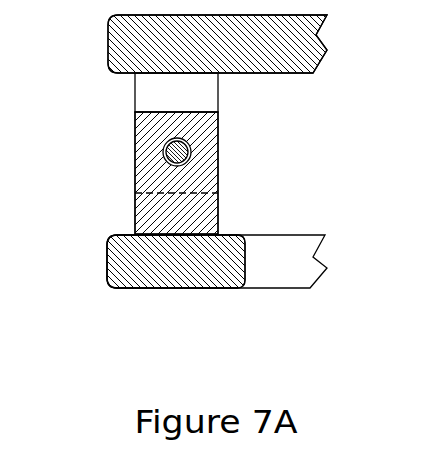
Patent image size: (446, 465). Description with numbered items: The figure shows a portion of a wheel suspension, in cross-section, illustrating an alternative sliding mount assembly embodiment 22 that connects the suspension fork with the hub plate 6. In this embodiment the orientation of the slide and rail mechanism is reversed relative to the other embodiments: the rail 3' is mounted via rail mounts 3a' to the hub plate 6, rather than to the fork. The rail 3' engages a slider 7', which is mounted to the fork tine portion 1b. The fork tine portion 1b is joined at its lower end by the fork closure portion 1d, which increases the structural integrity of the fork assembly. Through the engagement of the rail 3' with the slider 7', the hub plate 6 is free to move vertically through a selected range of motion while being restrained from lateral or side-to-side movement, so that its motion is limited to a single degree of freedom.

The hub plate 6 is at (170, 54).
The sliding mount assembly embodiment 22 is at (194, 153).
The rail mounts 3a' is at (247, 92).
The rail 3' is at (245, 152).
The slider 7' is at (251, 173).
The right fork tine portion 1b is at (165, 270).
The fork closure portion 1d is at (273, 270).